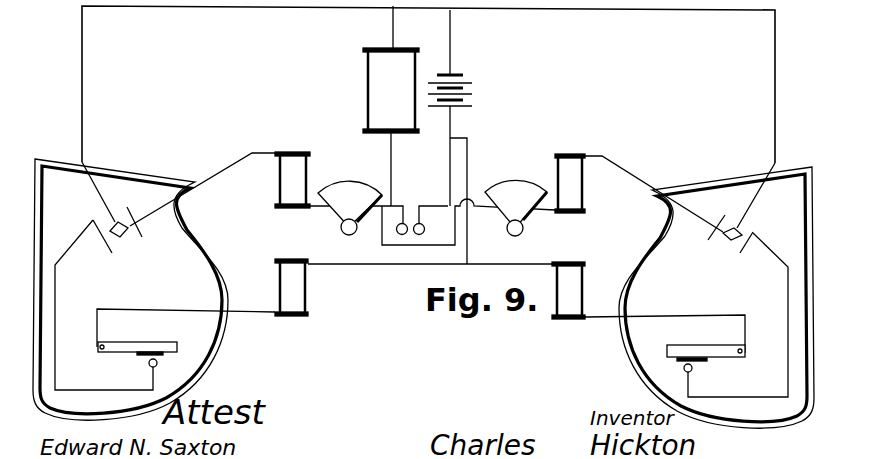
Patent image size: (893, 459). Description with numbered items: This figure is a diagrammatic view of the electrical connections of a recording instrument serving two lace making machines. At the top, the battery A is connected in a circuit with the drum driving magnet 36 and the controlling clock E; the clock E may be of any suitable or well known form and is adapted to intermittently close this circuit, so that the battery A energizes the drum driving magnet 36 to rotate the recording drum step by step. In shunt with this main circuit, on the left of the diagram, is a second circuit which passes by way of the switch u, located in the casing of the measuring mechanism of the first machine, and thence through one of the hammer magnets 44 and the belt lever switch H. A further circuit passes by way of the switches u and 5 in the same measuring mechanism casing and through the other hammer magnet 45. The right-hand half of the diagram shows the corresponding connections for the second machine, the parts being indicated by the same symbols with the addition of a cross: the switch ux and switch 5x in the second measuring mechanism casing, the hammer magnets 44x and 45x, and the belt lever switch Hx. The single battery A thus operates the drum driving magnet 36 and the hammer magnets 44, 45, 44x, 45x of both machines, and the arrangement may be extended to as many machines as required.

The drum driving magnet 36 is at (391, 106).
The battery A is at (462, 137).
The controlling clock E is at (419, 229).
The belt lever switch H is at (350, 193).
The belt lever switch Hx is at (516, 195).
The hammer magnet 44 is at (278, 180).
The hammer magnet 44x is at (589, 183).
The hammer magnet 45 is at (275, 287).
The hammer magnet 45x is at (584, 290).
The switch u is at (173, 203).
The switch ux is at (680, 204).
The switch 5 is at (186, 342).
The switch 5x is at (665, 352).